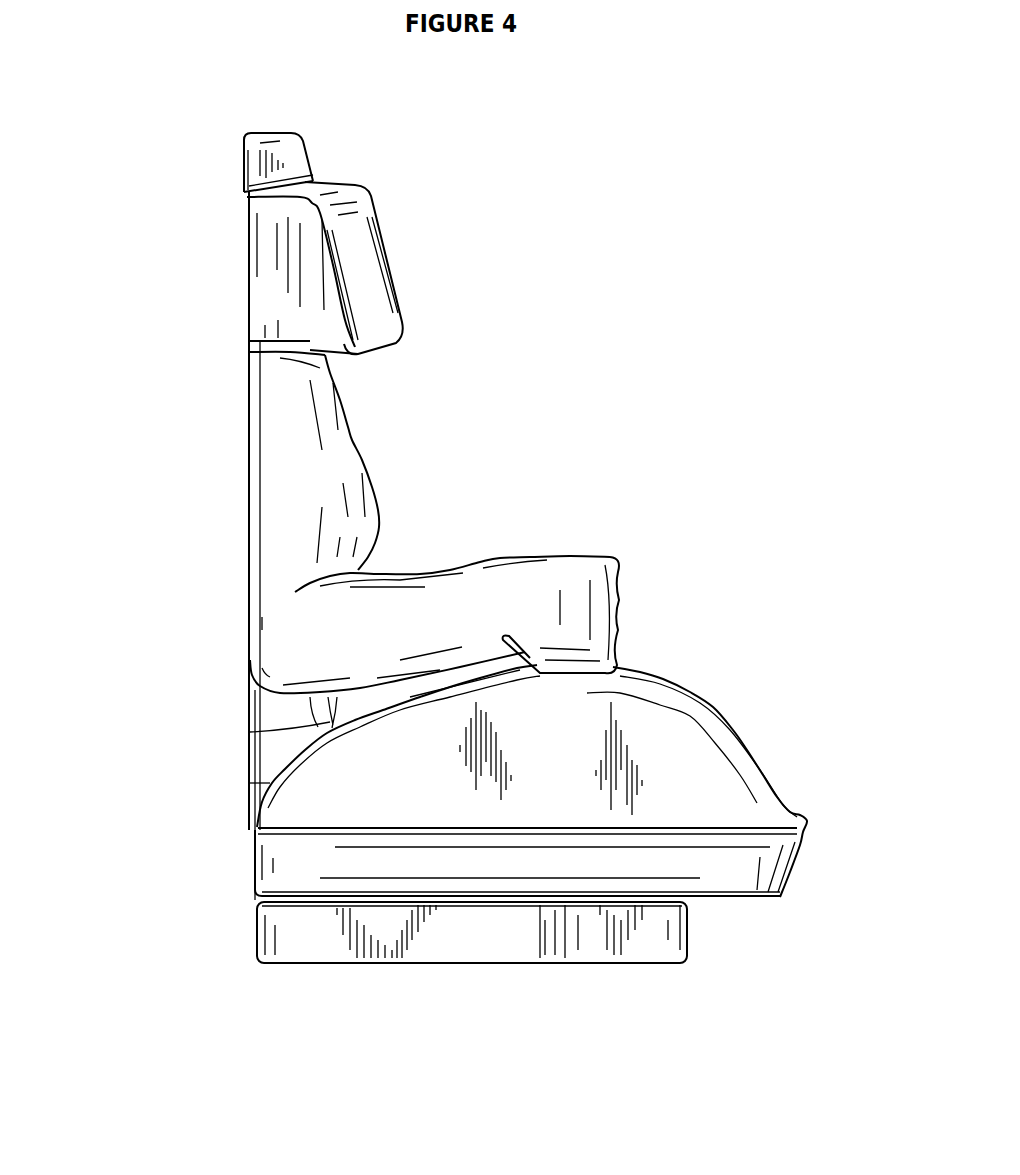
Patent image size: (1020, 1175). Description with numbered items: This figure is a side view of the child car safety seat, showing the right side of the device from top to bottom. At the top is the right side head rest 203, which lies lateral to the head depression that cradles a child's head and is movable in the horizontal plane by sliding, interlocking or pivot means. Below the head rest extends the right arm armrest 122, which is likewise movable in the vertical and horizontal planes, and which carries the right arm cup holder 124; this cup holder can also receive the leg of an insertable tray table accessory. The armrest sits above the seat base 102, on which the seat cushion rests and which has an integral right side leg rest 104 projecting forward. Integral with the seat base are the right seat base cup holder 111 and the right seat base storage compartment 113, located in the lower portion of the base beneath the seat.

The right side head rest 203 is at (385, 244).
The right arm armrest 122 is at (428, 606).
The right arm cup holder 124 is at (612, 559).
The right side leg rest 104 is at (712, 710).
The seat base 102 is at (748, 854).
The right seat base storage compartment 113 is at (322, 933).
The right seat base cup holder 111 is at (595, 952).